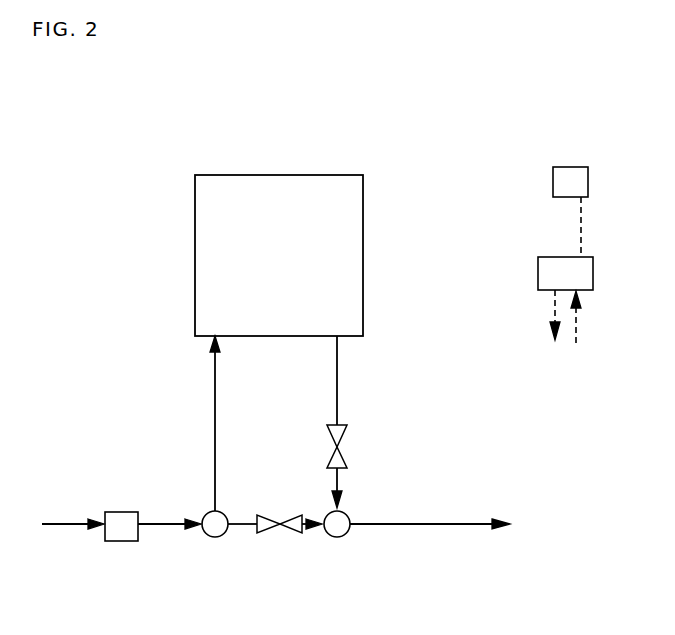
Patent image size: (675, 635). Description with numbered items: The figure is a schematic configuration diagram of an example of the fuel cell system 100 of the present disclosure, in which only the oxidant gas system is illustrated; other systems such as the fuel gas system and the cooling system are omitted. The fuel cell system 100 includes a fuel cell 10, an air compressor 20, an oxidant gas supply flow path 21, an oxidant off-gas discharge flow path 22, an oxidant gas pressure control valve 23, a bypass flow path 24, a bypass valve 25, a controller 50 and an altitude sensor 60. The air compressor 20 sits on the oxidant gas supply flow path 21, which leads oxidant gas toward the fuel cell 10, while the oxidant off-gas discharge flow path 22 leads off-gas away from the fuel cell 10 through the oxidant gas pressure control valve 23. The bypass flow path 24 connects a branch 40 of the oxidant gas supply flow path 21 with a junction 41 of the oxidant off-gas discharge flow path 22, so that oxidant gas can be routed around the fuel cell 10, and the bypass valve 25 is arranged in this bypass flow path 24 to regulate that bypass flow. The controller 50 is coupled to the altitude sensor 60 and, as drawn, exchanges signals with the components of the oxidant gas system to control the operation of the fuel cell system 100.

The fuel cell system 100 is at (553, 87).
The fuel cell 10 is at (195, 252).
The air compressor 20 is at (108, 541).
The oxidant gas supply flow path 21 is at (65, 523).
The oxidant off-gas discharge flow path 22 is at (455, 524).
The oxidant gas pressure control valve 23 is at (345, 428).
The bypass flow path 24 is at (245, 527).
The bypass valve 25 is at (280, 532).
The branch 40 is at (220, 538).
The junction 41 is at (348, 532).
The controller 50 is at (538, 282).
The altitude sensor 60 is at (553, 185).